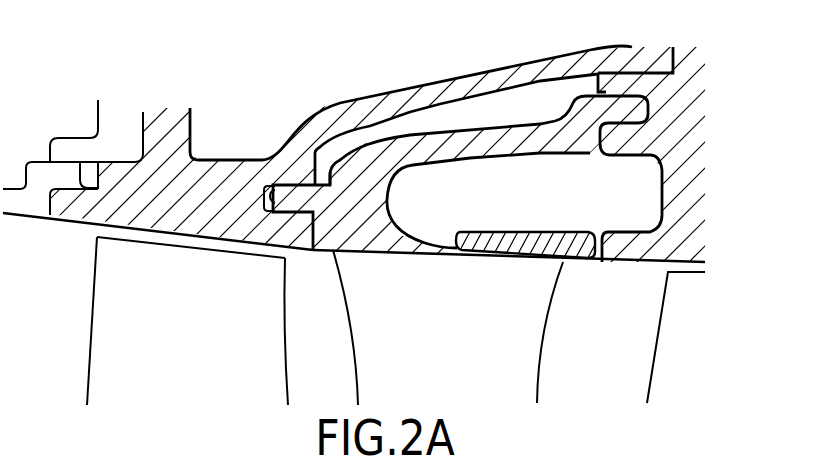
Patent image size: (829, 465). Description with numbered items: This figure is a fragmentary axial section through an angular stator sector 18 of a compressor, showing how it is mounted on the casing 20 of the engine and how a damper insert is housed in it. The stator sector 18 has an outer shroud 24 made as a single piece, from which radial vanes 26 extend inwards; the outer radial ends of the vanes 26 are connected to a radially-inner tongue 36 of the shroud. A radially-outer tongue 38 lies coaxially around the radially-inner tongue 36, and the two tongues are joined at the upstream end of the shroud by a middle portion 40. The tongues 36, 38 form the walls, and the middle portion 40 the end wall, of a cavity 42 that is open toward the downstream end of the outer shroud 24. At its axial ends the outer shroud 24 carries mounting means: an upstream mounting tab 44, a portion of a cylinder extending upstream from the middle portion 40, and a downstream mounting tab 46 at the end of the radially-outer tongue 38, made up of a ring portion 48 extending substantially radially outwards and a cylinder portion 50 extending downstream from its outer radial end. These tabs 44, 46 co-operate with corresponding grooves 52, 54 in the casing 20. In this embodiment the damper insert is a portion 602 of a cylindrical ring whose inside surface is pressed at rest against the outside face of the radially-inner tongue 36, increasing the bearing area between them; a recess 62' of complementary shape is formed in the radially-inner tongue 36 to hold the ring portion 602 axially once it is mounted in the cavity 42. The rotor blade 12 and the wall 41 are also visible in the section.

The rotor blade 12 is at (108, 360).
The stator sector 18 is at (544, 386).
The casing 20 is at (232, 181).
The outer shroud 24 is at (412, 130).
The radial vane 26 is at (530, 336).
The radially-inner tongue 36 is at (447, 258).
The radially-outer tongue 38 is at (468, 140).
The middle portion 40 is at (308, 148).
The upper wall of groove 41 is at (349, 141).
The cavity 42 is at (343, 203).
The upstream mounting tab 44 is at (268, 243).
The downstream mounting tab 46 is at (640, 109).
The ring portion 48 is at (583, 125).
The cylinder portion 50 is at (617, 110).
The groove 52 is at (273, 186).
The groove 54 is at (648, 135).
The portion of a cylindrical ring 602 is at (533, 232).
The recess 62' is at (522, 267).